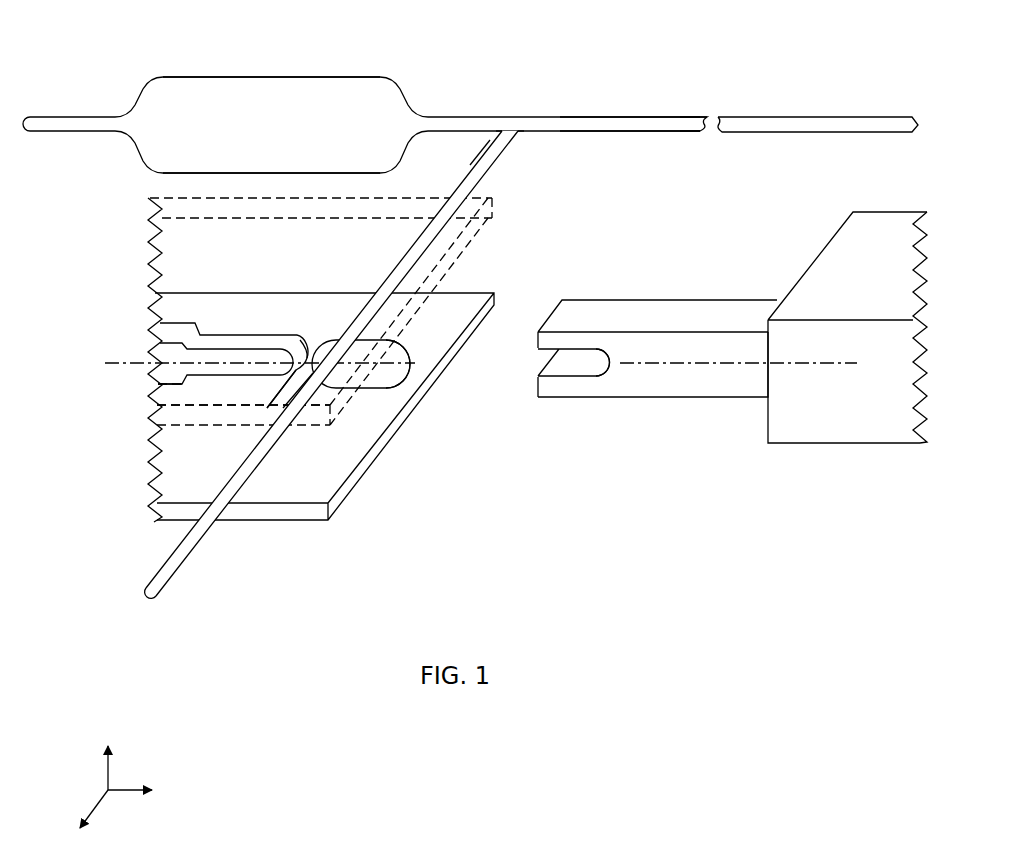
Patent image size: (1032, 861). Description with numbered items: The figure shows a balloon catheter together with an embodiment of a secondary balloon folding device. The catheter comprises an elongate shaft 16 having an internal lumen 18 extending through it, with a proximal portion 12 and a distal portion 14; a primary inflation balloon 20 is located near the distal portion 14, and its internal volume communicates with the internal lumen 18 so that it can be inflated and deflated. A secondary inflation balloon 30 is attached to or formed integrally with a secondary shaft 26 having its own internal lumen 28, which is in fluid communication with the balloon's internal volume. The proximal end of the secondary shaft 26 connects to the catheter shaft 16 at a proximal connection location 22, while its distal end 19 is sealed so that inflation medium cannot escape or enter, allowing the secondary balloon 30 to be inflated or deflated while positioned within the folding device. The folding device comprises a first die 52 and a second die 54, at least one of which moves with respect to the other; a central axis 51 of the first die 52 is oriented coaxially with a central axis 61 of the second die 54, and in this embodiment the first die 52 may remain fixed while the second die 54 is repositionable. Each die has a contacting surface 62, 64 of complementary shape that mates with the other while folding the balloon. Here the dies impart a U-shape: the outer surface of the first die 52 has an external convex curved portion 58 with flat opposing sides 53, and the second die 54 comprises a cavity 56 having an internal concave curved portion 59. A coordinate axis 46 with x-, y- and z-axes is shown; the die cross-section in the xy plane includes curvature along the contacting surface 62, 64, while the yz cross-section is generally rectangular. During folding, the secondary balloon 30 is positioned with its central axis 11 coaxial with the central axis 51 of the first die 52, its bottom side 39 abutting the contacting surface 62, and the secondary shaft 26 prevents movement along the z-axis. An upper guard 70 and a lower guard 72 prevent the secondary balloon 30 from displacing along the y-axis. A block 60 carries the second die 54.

The central axis 11 is at (410, 360).
The proximal portion 12 is at (860, 92).
The distal portion 14 is at (73, 100).
The elongate shaft 16 is at (690, 122).
The internal lumen 18 is at (632, 121).
The distal end 19 is at (146, 594).
The primary inflation balloon 20 is at (205, 77).
The proximal connection location 22 is at (526, 134).
The secondary shaft 26 is at (488, 173).
The internal lumen 28 is at (480, 162).
The secondary inflation balloon 30 is at (403, 387).
The bottom side 39 is at (270, 402).
The coordinate axis 46 is at (108, 792).
The central axis 51 is at (126, 361).
The first die 52 is at (228, 333).
The opposing sides 53 is at (158, 378).
The second die 54 is at (598, 398).
The cavity 56 is at (528, 362).
The external convex curved portion 58 is at (303, 349).
The internal concave curved portion 59 is at (603, 362).
The block 60 is at (847, 327).
The central axis 61 is at (842, 366).
The contacting surface 62 is at (295, 340).
The contacting surface 64 is at (587, 356).
The upper guard 70 is at (464, 252).
The lower guard 72 is at (268, 522).